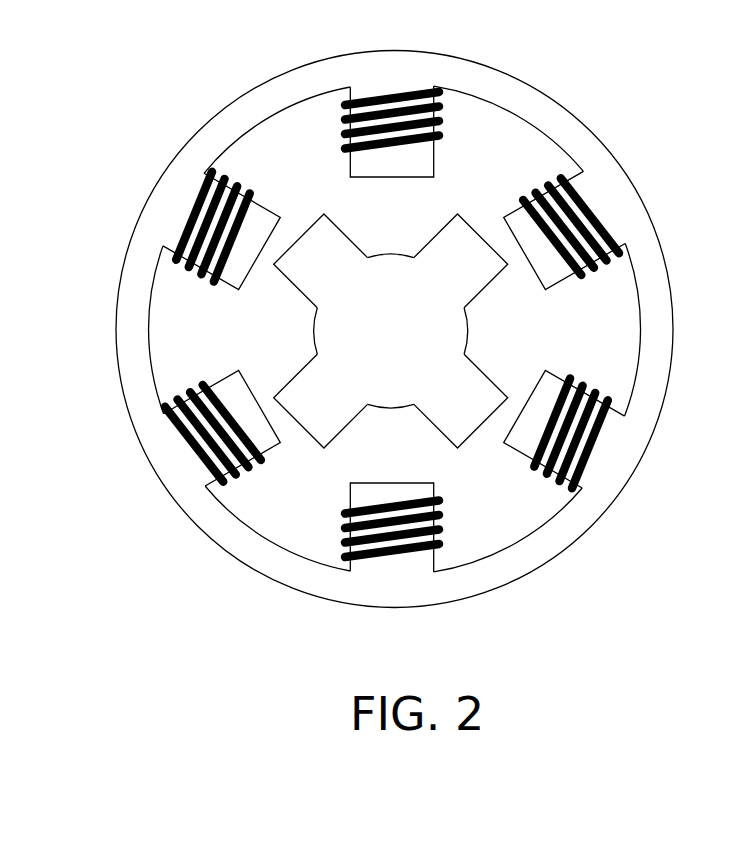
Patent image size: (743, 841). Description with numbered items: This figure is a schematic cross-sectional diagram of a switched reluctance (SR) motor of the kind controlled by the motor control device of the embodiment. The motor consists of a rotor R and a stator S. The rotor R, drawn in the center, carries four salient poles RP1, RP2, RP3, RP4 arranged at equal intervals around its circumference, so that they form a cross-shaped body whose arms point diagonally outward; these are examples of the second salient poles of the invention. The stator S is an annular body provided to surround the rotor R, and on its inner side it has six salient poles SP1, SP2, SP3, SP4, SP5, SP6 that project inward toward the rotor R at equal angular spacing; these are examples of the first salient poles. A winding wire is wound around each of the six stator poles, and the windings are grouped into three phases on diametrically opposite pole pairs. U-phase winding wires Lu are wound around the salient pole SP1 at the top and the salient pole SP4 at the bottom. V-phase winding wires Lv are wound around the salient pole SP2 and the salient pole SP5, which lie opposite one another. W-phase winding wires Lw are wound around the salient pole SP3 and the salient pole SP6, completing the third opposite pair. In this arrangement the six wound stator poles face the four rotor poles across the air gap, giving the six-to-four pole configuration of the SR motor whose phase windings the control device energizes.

The stator S is at (614, 91).
The rotor R is at (491, 458).
The salient pole SP1 is at (436, 157).
The salient pole SP2 is at (548, 290).
The salient pole SP3 is at (550, 372).
The salient pole SP4 is at (350, 498).
The salient pole SP5 is at (238, 372).
The salient pole SP6 is at (246, 277).
The salient pole RP1 is at (338, 232).
The salient pole RP2 is at (460, 231).
The salient pole RP3 is at (470, 364).
The salient pole RP4 is at (334, 423).
The U-phase winding wire Lu is at (442, 110).
The V-phase winding wire Lv is at (611, 254).
The W-phase winding wire Lw is at (596, 392).